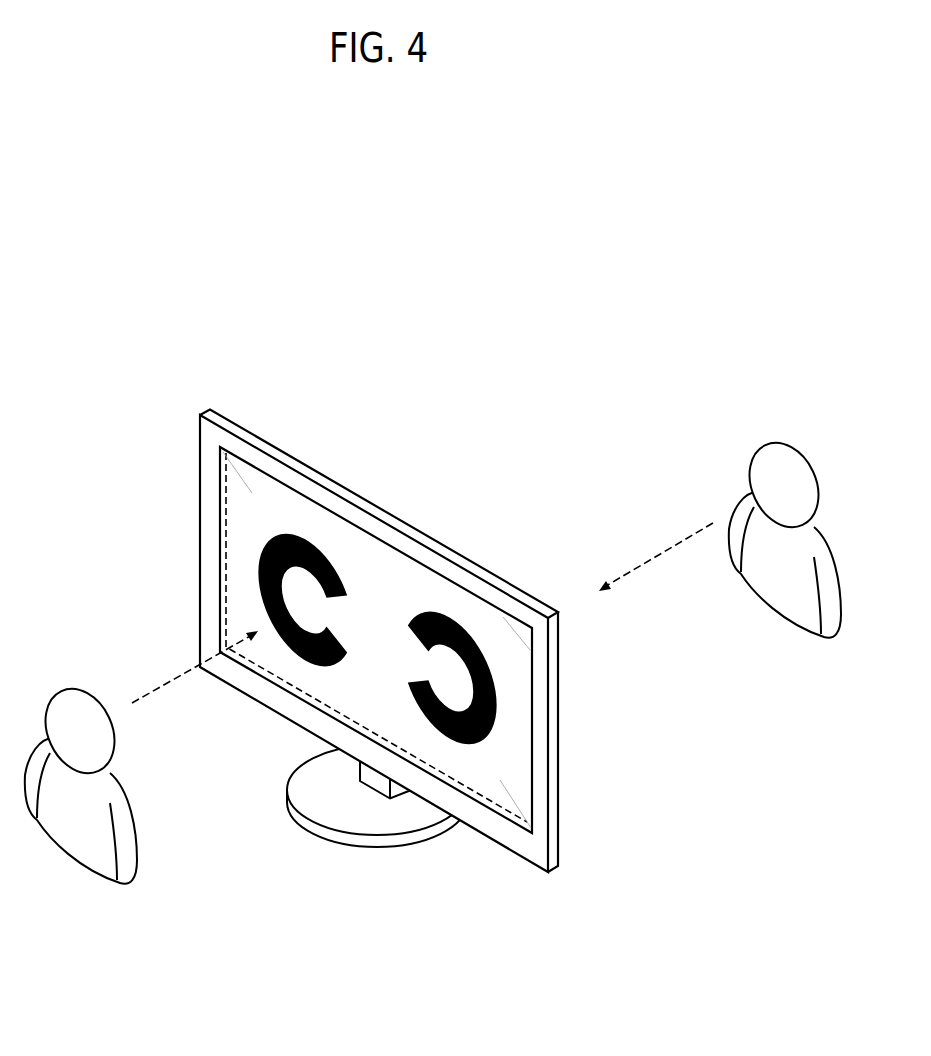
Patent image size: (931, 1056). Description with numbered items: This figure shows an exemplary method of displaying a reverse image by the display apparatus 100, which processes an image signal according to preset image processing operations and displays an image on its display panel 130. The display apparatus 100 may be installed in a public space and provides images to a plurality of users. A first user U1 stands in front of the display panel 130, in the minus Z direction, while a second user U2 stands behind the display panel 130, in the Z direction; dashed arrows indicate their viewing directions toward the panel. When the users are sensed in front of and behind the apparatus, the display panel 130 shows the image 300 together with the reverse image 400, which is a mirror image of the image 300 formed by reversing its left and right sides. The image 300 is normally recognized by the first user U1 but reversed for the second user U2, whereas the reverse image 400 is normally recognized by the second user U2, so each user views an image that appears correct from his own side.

The display apparatus 100 is at (172, 383).
The display panel 130 is at (249, 528).
The image 300 is at (293, 545).
The reverse image 400 is at (434, 625).
The first user U1 is at (69, 860).
The second user U2 is at (771, 612).